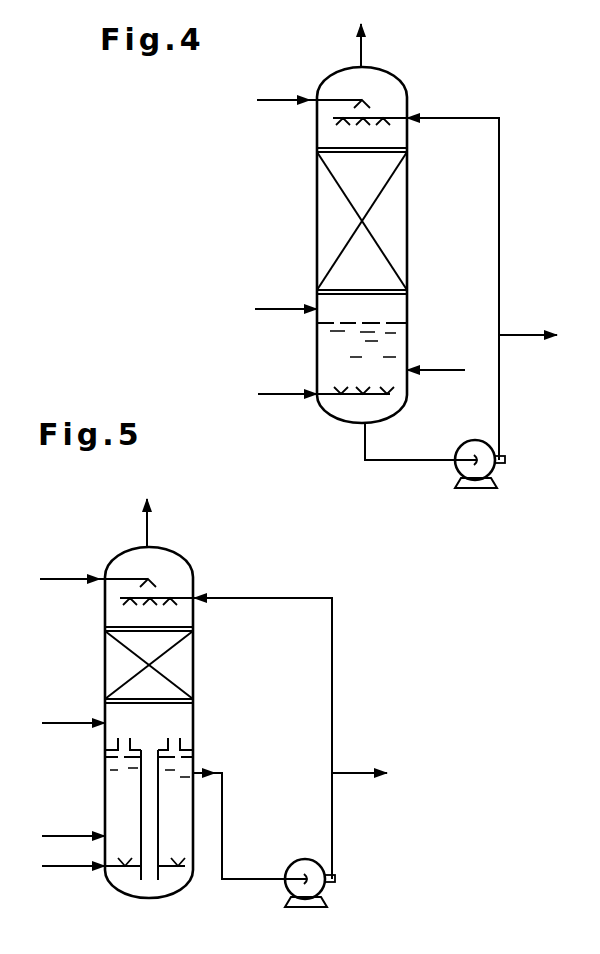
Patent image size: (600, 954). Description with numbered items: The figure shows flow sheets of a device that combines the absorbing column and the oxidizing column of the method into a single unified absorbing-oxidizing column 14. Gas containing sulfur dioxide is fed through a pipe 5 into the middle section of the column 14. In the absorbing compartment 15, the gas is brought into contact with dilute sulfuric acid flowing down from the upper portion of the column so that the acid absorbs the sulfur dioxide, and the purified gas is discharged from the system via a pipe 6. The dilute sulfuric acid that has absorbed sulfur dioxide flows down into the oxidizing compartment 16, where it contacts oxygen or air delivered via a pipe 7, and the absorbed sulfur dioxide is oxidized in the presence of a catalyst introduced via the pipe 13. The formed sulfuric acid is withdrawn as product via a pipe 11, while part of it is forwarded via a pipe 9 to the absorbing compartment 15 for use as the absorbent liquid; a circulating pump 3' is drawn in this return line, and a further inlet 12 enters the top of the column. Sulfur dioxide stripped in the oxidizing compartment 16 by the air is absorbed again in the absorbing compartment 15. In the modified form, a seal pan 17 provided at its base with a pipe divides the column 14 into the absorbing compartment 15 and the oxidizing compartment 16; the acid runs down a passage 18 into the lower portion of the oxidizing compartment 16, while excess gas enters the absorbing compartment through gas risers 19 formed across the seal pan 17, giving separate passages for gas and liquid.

In FIG. 4, the circulation pump 3' is at (460, 467).
In FIG. 5, the circulation pump 3' is at (336, 900).
In FIG. 4, the pipe 5 is at (268, 308).
In FIG. 5, the pipe 5 is at (55, 722).
In FIG. 4, the pipe 6 is at (363, 50).
In FIG. 5, the pipe 6 is at (150, 525).
In FIG. 4, the pipe 7 is at (270, 393).
In FIG. 5, the pipe 7 is at (58, 868).
In FIG. 4, the pipe 9 is at (500, 181).
In FIG. 5, the pipe 9 is at (333, 631).
In FIG. 4, the pipe 11 is at (522, 333).
In FIG. 5, the pipe 11 is at (352, 772).
In FIG. 4, the wash liquid inlet 12 is at (272, 101).
In FIG. 5, the wash liquid inlet 12 is at (58, 578).
In FIG. 4, the pipe 13 is at (440, 371).
In FIG. 5, the pipe 13 is at (55, 835).
In FIG. 4, the absorbing-oxidizing column 14 is at (317, 212).
In FIG. 5, the absorbing-oxidizing column 14 is at (194, 663).
In FIG. 4, the absorbing compartment 15 is at (388, 203).
In FIG. 5, the absorbing compartment 15 is at (118, 661).
In FIG. 4, the oxidizing compartment 16 is at (400, 328).
In FIG. 5, the seal pan 17 is at (195, 749).
In FIG. 5, the passage 18 is at (122, 790).
In FIG. 5, the gas risers 19 is at (180, 729).